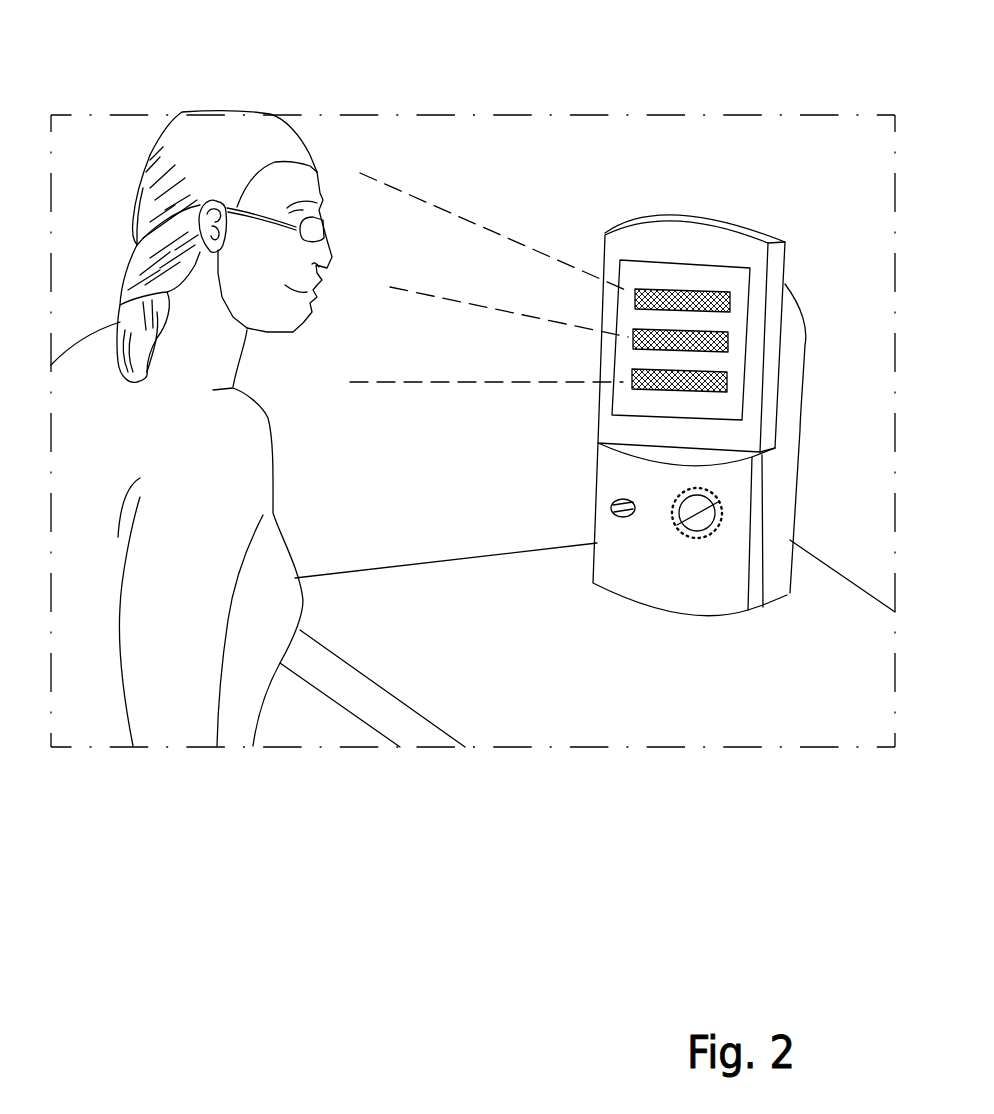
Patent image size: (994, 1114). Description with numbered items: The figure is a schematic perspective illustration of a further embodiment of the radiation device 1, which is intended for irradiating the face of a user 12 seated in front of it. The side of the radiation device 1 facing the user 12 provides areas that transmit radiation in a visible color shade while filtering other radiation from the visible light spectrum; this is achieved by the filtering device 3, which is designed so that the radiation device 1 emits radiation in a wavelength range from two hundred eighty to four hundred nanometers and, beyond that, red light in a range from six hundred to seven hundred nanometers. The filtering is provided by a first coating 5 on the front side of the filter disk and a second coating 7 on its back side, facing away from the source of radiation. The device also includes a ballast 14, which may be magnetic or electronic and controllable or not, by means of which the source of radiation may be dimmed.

The radiation device 1 is at (791, 204).
The filtering device 3 is at (772, 276).
The first coating 5 is at (725, 280).
The second coating 7 is at (675, 292).
The user 12 is at (313, 99).
The ballast 14 is at (716, 570).